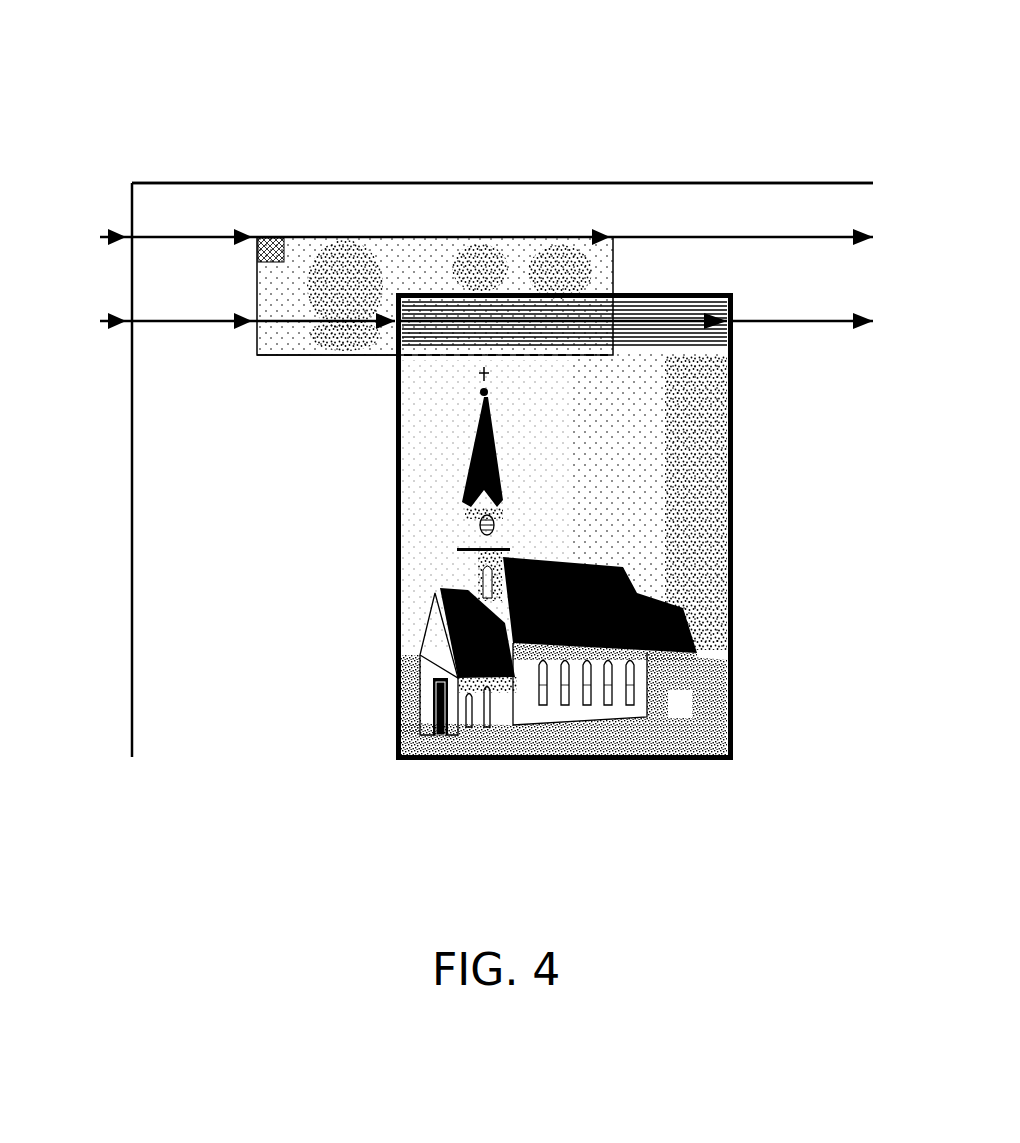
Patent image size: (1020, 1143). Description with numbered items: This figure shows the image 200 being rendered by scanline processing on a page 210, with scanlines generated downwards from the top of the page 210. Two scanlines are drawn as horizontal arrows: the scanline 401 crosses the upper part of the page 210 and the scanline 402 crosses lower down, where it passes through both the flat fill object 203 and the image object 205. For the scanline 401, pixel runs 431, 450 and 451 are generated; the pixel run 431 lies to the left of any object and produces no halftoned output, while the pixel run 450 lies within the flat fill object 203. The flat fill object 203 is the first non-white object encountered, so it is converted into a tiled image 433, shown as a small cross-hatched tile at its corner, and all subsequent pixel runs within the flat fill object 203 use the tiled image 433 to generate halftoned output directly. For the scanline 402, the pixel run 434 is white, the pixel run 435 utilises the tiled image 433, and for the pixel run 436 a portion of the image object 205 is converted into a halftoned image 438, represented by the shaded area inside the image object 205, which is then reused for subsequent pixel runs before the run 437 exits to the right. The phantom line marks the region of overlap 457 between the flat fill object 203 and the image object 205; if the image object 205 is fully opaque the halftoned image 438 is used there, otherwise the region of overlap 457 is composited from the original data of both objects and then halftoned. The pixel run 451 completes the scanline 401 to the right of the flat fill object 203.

The image 200 is at (838, 140).
The flat fill object 203 is at (343, 287).
The image object 205 is at (670, 500).
The page 210 is at (527, 182).
The scanline 401 is at (97, 236).
The scanline 402 is at (100, 323).
The pixel run 431 is at (183, 235).
The tiled image 433 is at (252, 228).
The pixel run 434 is at (165, 323).
The pixel run 435 is at (313, 356).
The pixel run 436 is at (531, 330).
The pixel run 437 is at (797, 321).
The halftoned image 438 is at (650, 345).
The pixel run 450 is at (452, 236).
The pixel run 451 is at (705, 236).
The region of overlap 457 is at (447, 360).